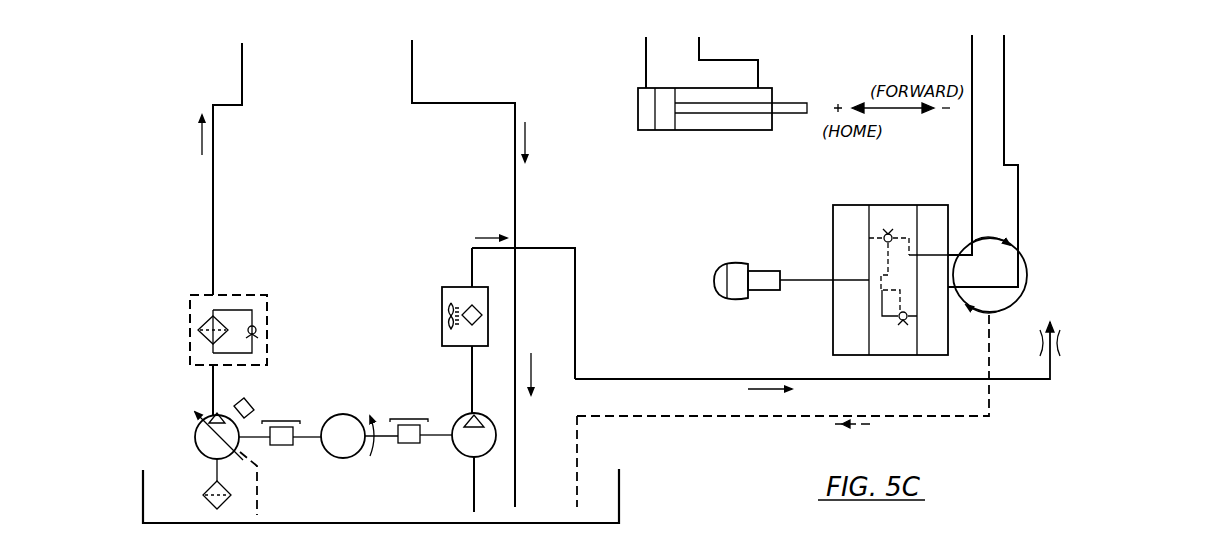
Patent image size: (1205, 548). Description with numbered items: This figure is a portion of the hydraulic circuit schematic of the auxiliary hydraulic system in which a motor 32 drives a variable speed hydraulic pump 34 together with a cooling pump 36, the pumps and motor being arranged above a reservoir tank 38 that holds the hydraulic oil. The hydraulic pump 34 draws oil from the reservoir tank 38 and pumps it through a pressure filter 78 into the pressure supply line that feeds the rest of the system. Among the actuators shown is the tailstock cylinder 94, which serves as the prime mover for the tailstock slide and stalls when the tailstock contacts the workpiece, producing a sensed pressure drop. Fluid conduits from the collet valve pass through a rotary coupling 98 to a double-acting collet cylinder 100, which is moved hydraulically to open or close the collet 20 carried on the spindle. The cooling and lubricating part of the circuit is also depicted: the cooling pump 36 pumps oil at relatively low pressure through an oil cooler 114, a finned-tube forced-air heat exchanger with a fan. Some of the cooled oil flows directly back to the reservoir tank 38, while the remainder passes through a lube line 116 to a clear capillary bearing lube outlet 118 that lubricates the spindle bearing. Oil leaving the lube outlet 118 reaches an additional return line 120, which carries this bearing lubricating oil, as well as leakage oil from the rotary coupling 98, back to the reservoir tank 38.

The collet 20 is at (777, 268).
The motor 32 is at (360, 410).
The variable speed hydraulic pump 34 is at (195, 440).
The cooling pump 36 is at (468, 417).
The reservoir tank 38 is at (622, 490).
The pressure filter 78 is at (267, 295).
The tailstock cylinder 94 is at (706, 134).
The rotary coupling 98 is at (1028, 268).
The double-acting collet cylinder 100 is at (886, 205).
The oil cooler 114 is at (455, 287).
The lube line 116 is at (820, 378).
The bearing lube outlet 118 is at (1066, 340).
The return line 120 is at (962, 416).